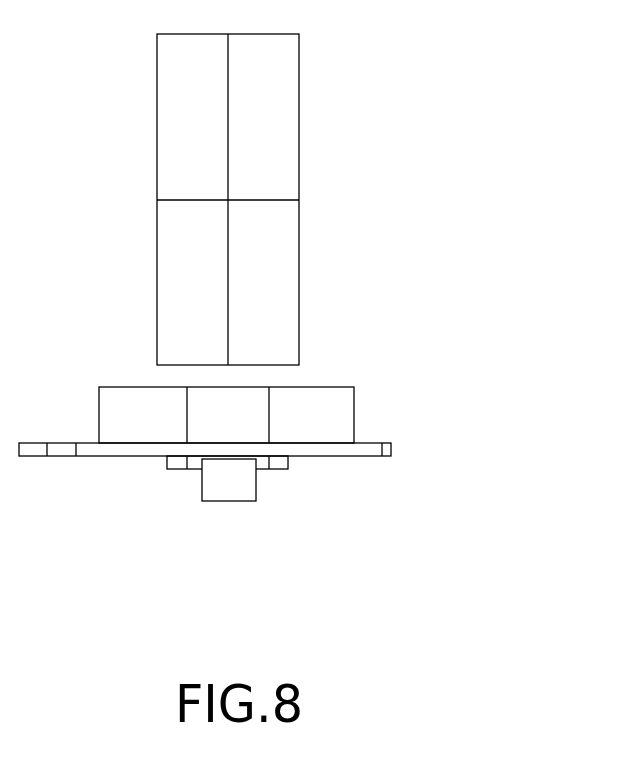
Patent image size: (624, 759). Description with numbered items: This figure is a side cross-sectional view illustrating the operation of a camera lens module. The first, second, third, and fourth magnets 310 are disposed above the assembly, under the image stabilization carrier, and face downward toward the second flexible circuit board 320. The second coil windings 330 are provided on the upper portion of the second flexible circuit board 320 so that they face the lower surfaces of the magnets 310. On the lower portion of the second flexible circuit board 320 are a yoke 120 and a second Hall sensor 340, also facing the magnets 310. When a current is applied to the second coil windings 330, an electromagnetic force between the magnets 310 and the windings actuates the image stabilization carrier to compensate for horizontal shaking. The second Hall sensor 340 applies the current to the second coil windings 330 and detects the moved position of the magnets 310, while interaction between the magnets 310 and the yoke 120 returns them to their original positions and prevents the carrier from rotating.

The first, second, third, and fourth magnets 310 is at (299, 116).
The second coil windings 330 is at (332, 395).
The second flexible circuit board 320 is at (370, 447).
The yokes 120 is at (279, 468).
The second Hall sensors 340 is at (222, 492).